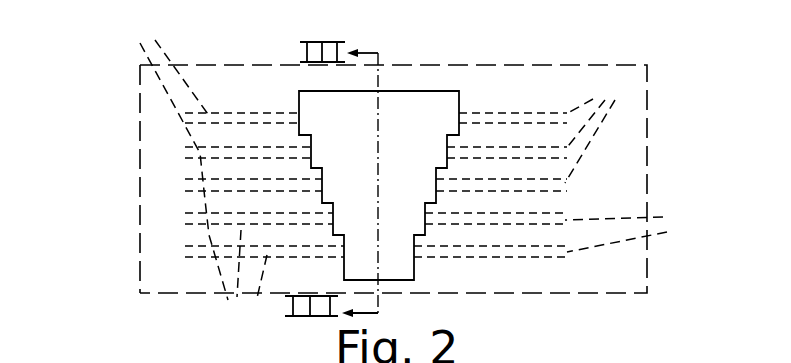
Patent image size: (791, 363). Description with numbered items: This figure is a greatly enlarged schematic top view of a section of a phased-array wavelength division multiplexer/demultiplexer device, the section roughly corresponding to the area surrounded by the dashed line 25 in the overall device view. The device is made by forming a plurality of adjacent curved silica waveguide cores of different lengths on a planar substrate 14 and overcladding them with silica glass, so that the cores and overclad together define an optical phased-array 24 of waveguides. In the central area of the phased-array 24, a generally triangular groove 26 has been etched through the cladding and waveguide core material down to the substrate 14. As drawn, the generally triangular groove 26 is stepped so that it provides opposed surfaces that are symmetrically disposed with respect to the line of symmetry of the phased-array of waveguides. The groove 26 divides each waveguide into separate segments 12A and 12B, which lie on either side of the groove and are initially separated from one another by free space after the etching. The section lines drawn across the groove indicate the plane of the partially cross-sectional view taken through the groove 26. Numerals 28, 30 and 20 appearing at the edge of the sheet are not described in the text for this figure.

The waveguide segment 12A is at (192, 178).
The waveguide segment 12B is at (540, 117).
The planar substrate 14 is at (515, 97).
The optical phased-array 24 is at (266, 46).
The dashed line 25 is at (140, 172).
The triangular groove 26 is at (431, 96).
The element 28 is at (44, 356).
The element 30 is at (547, 352).
The element 20 is at (167, 359).